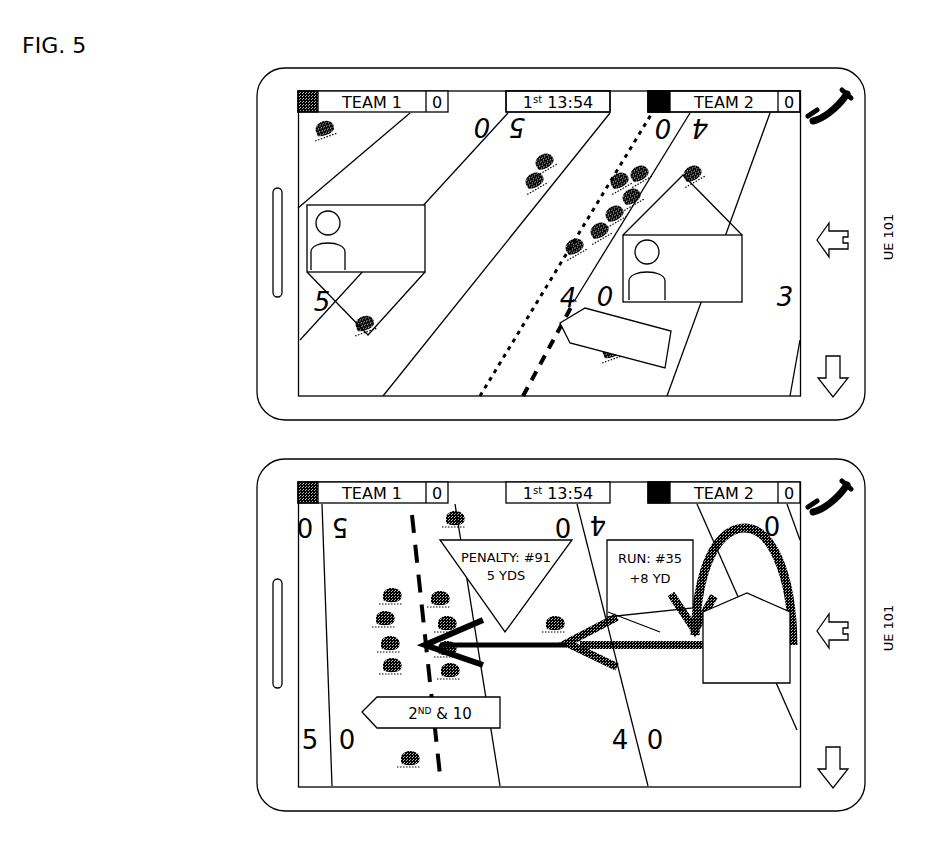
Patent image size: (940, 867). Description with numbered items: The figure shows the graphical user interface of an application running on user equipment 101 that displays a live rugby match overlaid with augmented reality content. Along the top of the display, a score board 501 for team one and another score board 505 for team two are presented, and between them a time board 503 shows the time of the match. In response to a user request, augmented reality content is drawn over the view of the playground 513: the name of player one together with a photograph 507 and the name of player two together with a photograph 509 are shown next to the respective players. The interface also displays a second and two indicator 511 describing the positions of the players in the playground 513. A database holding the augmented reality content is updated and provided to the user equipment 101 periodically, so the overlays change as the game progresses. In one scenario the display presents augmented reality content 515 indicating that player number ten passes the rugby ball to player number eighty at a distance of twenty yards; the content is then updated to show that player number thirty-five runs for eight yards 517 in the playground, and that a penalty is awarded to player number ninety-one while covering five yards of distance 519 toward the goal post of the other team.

The user equipment 101 is at (576, 439).
The score board of team 1 501 is at (413, 91).
The time board 503 is at (598, 91).
The score board of team 2 505 is at (750, 91).
The name of player 1 and photograph 507 is at (308, 236).
The name of player 2 and photograph 509 is at (747, 267).
The 2nd and 2 indicator 511 is at (672, 347).
The playground 513 is at (735, 188).
The augmented reality content of pass 515 is at (790, 582).
The augmented reality content of run 517 is at (698, 645).
The augmented reality content of penalty 519 is at (422, 644).